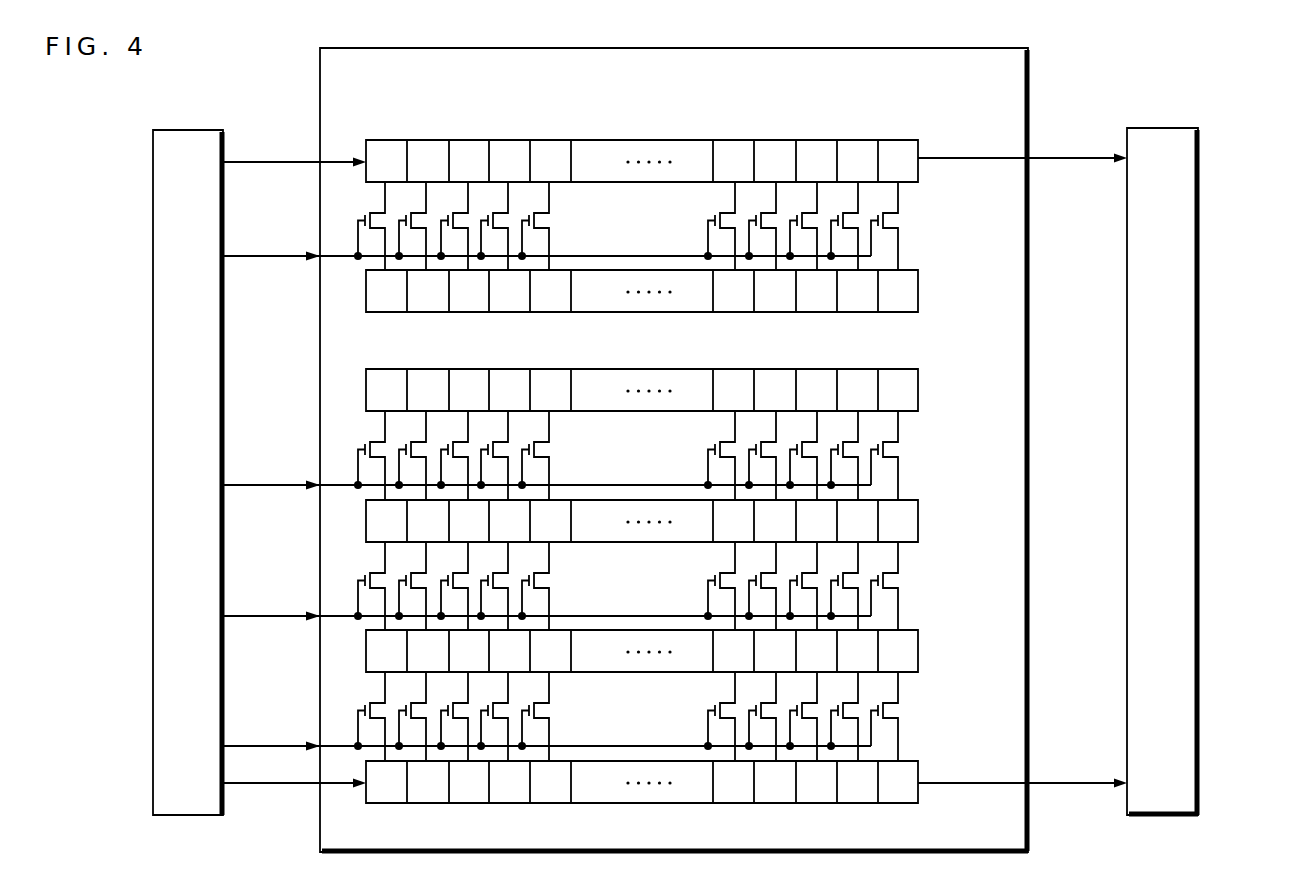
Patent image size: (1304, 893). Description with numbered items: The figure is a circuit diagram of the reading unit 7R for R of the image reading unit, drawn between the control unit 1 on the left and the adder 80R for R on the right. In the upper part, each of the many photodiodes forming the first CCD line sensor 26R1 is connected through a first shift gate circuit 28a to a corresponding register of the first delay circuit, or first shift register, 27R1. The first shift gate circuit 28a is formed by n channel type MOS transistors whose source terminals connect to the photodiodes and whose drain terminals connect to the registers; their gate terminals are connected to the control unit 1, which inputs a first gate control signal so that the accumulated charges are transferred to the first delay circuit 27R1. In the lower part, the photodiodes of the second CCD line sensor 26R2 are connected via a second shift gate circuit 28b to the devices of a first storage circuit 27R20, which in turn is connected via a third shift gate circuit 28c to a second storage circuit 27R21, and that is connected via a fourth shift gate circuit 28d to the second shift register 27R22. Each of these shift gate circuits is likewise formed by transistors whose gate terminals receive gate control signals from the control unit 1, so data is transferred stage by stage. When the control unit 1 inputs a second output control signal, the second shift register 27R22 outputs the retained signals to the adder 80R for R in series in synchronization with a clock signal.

The control unit 1 is at (187, 130).
The reading unit for R 7R is at (912, 48).
The adder for R 80R is at (1200, 200).
The first delay circuit (first shift register) 27R1 is at (600, 139).
The first CCD line sensor 26R1 is at (595, 269).
The second CCD line sensor 26R2 is at (612, 368).
The first storage circuit 27R20 is at (594, 499).
The second storage circuit 27R21 is at (594, 629).
The second shift register 27R22 is at (596, 760).
The first shift gate circuit 28a is at (922, 222).
The second shift gate circuit 28b is at (922, 451).
The third shift gate circuit 28c is at (922, 577).
The fourth shift gate circuit 28d is at (922, 707).